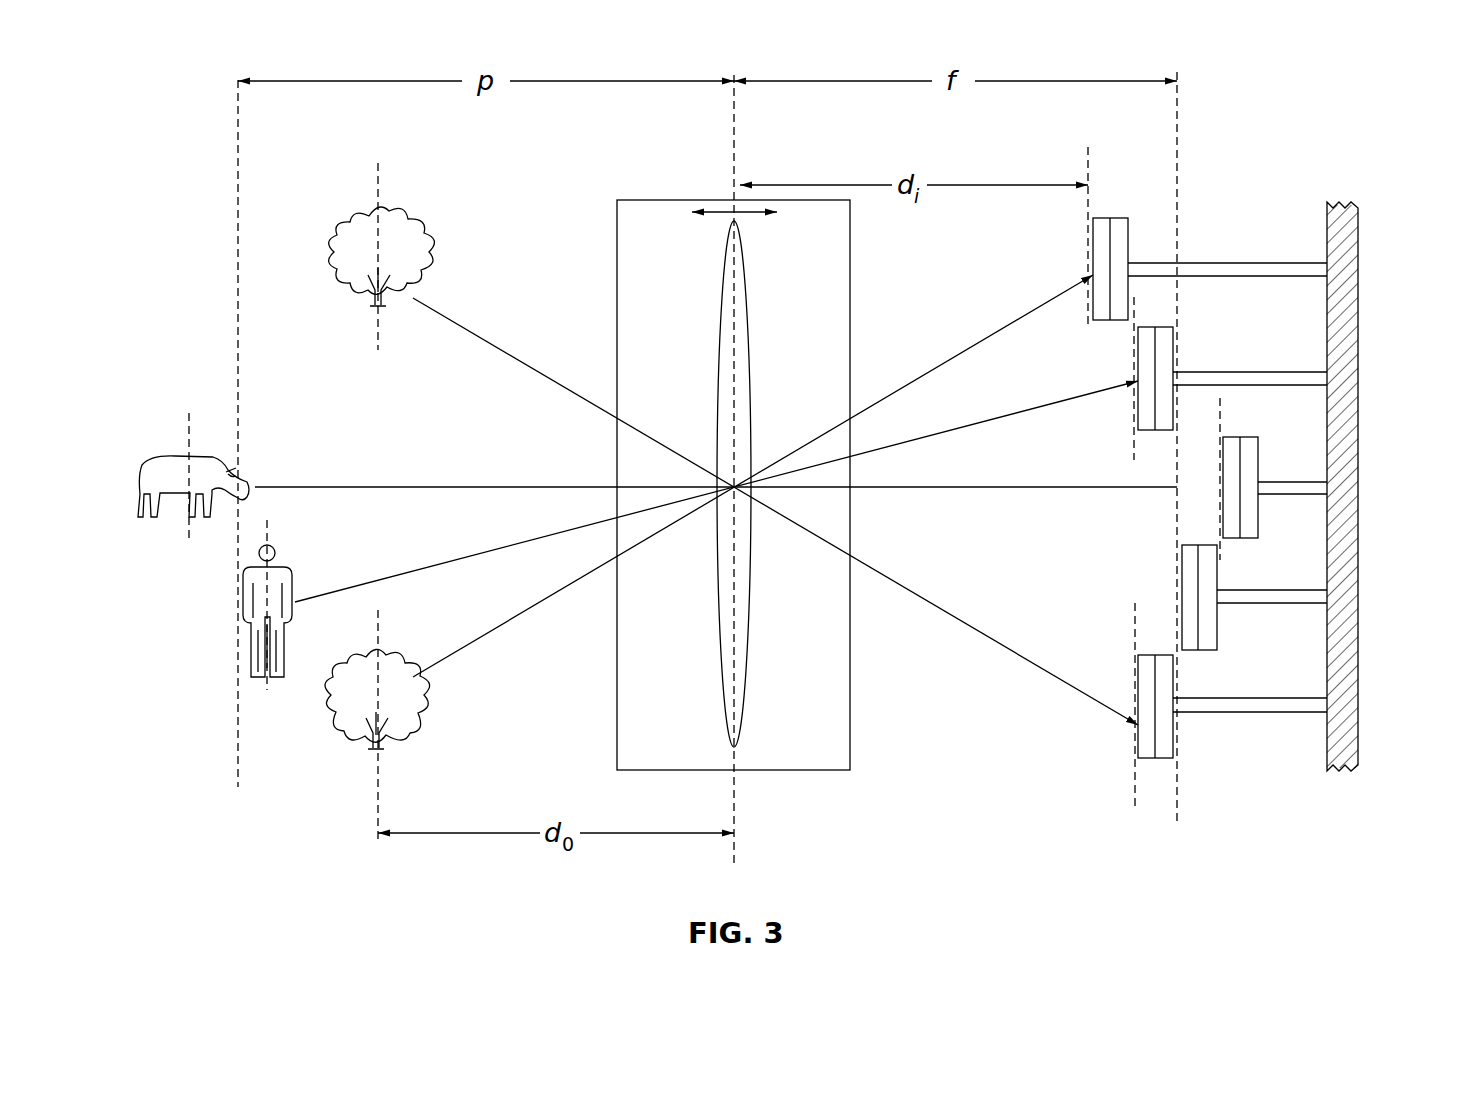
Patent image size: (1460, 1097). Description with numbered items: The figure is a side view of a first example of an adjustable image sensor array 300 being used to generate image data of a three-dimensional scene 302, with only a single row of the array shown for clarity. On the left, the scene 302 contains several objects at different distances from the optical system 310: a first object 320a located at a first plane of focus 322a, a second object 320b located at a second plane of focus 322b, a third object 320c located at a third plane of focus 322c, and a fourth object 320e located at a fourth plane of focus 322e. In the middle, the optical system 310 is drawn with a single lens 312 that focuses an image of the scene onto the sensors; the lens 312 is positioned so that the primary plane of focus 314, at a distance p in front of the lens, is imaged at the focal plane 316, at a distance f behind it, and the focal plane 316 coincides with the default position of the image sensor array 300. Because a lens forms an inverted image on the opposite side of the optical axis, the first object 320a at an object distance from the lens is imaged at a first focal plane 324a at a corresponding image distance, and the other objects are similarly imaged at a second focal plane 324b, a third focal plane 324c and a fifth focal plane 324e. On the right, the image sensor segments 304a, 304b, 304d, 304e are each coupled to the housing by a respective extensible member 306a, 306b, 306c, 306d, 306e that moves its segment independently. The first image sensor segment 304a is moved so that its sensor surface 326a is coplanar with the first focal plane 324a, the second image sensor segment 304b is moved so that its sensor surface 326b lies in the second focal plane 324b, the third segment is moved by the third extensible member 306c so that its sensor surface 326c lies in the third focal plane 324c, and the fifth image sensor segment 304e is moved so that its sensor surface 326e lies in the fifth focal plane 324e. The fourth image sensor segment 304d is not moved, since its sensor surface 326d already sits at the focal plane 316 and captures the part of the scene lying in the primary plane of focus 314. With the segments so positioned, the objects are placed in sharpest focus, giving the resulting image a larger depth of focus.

The image sensor array 300 is at (1255, 92).
The 3D scene 302 is at (272, 815).
The first image sensor segment 304a is at (1118, 218).
The second image sensor segment 304b is at (1258, 467).
The fourth image sensor segment 304d is at (1217, 620).
The fifth image sensor segment 304e is at (1163, 758).
The first extensible member 306a is at (1222, 263).
The second extensible member 306b is at (1245, 372).
The third extensible member 306c is at (1290, 482).
The fourth extensible member 306d is at (1225, 590).
The fifth extensible member 306e is at (1227, 698).
The optical system 310 is at (717, 194).
The lens 312 is at (720, 290).
The primary plane of focus 314 is at (238, 768).
The focal plane 316 is at (1177, 808).
The first object 320a is at (423, 712).
The second object 320b is at (258, 555).
The third object 320c is at (182, 456).
The fourth object 320e is at (348, 222).
The first plane of focus 322a is at (380, 782).
The second plane of focus 322b is at (267, 690).
The third plane of focus 322c is at (188, 520).
The fourth plane of focus 322e is at (380, 182).
The first focal plane 324a is at (1087, 170).
The second focal plane 324b is at (1134, 445).
The third focal plane 324c is at (1222, 430).
The fifth focal plane 324e is at (1135, 790).
The sensor surface of the first image sensor segment 326a is at (1092, 255).
The sensor surface of the second image sensor segment 326b is at (1138, 352).
The sensor surface of the third image sensor segment 326c is at (1222, 487).
The sensor surface of the fourth image sensor segment 326d is at (1182, 565).
The sensor surface of the fifth image sensor segment 326e is at (1138, 666).